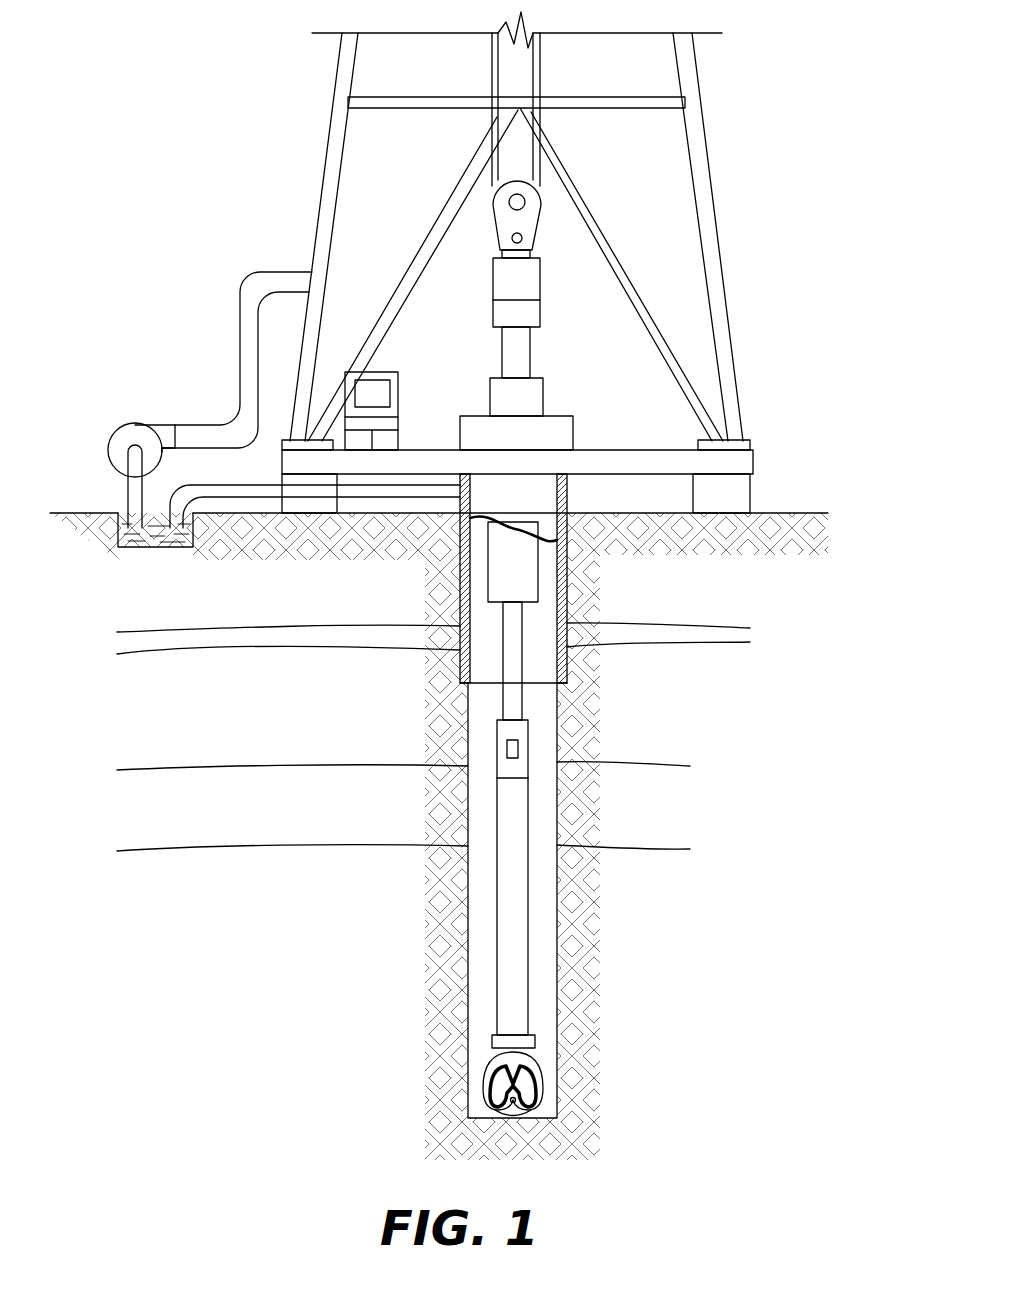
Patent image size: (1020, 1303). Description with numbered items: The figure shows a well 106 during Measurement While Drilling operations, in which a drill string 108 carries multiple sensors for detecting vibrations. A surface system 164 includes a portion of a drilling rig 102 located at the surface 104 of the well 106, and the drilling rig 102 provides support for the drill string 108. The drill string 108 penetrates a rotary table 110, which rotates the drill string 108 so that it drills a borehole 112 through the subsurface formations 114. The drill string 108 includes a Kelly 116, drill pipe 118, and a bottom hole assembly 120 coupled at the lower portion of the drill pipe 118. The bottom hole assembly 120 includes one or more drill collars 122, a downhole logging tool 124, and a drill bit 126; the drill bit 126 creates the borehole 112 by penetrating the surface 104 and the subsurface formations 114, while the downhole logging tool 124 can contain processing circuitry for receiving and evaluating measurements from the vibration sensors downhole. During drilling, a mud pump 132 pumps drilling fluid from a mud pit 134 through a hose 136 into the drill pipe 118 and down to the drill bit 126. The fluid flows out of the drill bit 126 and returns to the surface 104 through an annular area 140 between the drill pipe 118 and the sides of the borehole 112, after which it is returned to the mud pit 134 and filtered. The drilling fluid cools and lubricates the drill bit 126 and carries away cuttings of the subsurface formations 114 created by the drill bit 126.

The drilling rig 102 is at (552, 262).
The surface 104 is at (451, 820).
The well 106 is at (554, 577).
The drill string 108 is at (572, 877).
The rotary table 110 is at (549, 434).
The borehole 112 is at (557, 900).
The subsurface formations 114 is at (396, 740).
The Kelly 116 is at (541, 298).
The drill pipe 118 is at (567, 621).
The bottom hole assembly 120 is at (617, 915).
The drill collars 122 is at (572, 744).
The downhole logging tool 124 is at (577, 769).
The drill bit 126 is at (565, 1075).
The mud pump 132 is at (122, 458).
The mud pit 134 is at (258, 510).
The hose 136 is at (237, 360).
The annular area 140 is at (430, 918).
The surface system 164 is at (447, 586).